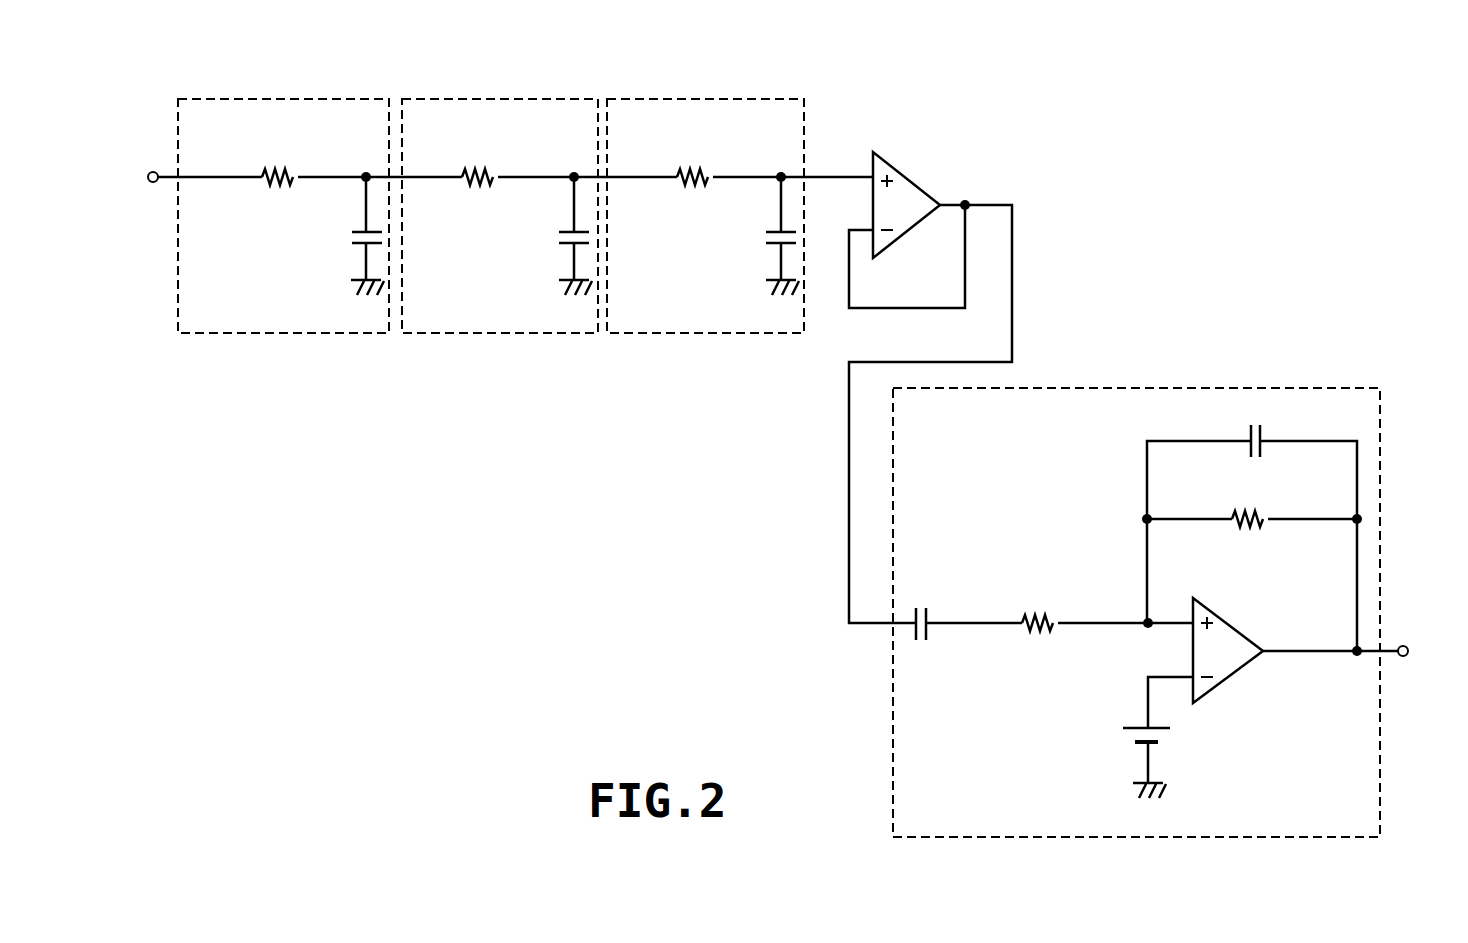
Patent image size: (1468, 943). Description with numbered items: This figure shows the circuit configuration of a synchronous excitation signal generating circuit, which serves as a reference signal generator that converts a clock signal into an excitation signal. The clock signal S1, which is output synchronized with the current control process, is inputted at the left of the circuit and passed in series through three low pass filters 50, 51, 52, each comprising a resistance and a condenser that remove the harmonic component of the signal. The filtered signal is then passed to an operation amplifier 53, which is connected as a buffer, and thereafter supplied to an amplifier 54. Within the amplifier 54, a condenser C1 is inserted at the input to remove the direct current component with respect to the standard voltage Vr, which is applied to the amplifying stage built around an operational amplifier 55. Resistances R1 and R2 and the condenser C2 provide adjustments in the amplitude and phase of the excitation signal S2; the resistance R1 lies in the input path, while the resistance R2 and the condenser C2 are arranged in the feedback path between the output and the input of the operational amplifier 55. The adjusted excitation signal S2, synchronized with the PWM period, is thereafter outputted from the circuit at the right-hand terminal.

The low pass filter 50 is at (288, 98).
The low pass filter 51 is at (495, 98).
The low pass filter 52 is at (681, 98).
The operation amplifier 53 is at (914, 180).
The amplifier 54 is at (1131, 388).
The operational amplifier 55 is at (1225, 684).
The condenser C1 is at (964, 608).
The resistance R1 is at (1107, 606).
The condenser C2 is at (1252, 523).
The resistance R2 is at (1252, 504).
The standard voltage Vr is at (1136, 737).
The clock signal S1 is at (189, 179).
The excitation signal S2 is at (1422, 654).